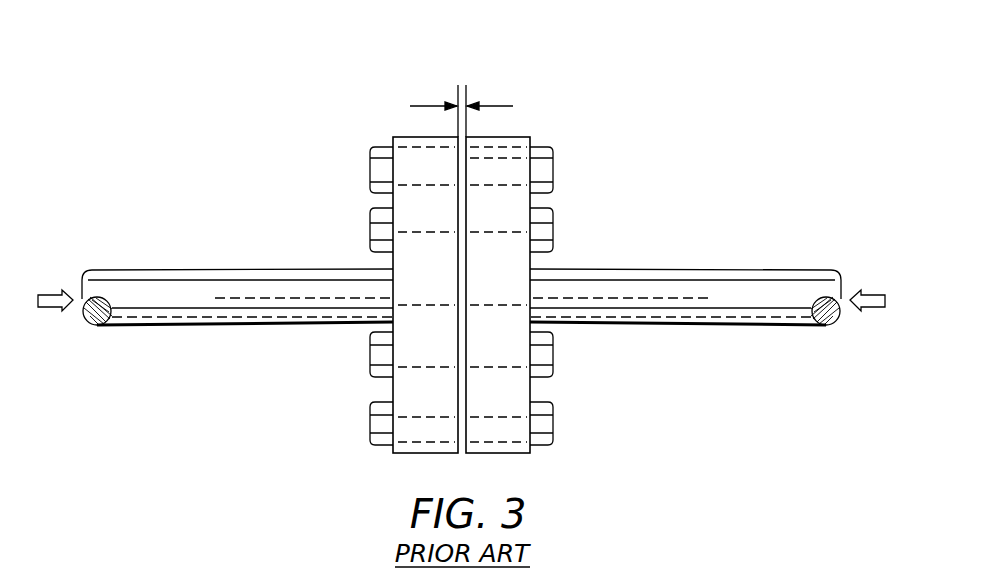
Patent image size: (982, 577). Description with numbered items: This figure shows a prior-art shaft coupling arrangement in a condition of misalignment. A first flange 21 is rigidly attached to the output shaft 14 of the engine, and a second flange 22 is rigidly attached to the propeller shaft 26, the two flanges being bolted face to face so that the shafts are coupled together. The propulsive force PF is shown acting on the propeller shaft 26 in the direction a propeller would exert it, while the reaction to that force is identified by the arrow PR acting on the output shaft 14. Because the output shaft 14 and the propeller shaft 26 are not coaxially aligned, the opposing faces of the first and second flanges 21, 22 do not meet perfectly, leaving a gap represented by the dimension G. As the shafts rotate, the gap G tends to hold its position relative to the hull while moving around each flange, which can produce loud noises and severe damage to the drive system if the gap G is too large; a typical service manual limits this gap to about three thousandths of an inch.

The output shaft 14 is at (705, 327).
The propeller shaft 26 is at (256, 327).
The first flange 21 is at (553, 201).
The second flange 22 is at (370, 199).
The gap G is at (459, 95).
The propulsive force PF is at (49, 289).
The reaction force PR is at (871, 291).